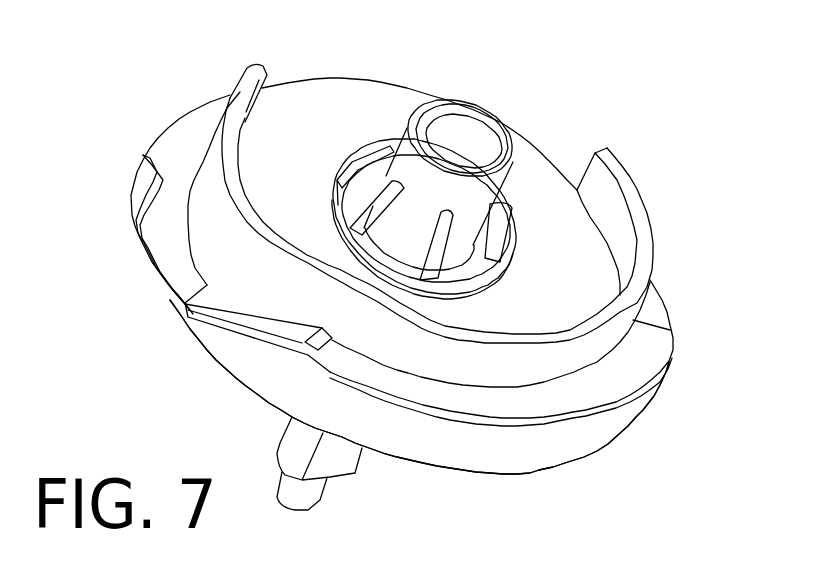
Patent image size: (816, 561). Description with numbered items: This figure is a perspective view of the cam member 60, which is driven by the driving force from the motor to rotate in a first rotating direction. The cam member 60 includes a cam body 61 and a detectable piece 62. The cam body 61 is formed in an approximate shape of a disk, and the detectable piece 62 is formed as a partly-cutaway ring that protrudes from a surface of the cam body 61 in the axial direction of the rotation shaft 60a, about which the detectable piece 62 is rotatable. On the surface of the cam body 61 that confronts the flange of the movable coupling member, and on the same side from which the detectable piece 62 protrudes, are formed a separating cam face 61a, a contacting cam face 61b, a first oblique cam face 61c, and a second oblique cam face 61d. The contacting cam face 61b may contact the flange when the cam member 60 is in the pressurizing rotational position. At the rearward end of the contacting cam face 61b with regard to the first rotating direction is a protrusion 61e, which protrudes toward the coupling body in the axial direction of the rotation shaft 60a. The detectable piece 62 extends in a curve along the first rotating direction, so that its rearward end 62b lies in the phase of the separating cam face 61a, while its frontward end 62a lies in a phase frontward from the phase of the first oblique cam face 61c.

The cam member 60 is at (104, 309).
The rotation shaft 60a is at (312, 498).
The cam body 61 is at (560, 443).
The separating cam face 61a is at (158, 186).
The contacting cam face 61b is at (604, 389).
The first oblique cam face 61c is at (650, 302).
The second oblique cam face 61d is at (247, 320).
The protrusion 61e is at (307, 334).
The detectable piece 62 is at (640, 194).
The frontward end 62a is at (588, 160).
The rearward end 62b is at (258, 68).